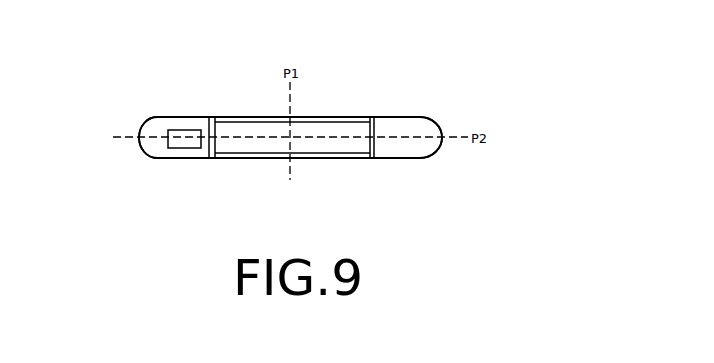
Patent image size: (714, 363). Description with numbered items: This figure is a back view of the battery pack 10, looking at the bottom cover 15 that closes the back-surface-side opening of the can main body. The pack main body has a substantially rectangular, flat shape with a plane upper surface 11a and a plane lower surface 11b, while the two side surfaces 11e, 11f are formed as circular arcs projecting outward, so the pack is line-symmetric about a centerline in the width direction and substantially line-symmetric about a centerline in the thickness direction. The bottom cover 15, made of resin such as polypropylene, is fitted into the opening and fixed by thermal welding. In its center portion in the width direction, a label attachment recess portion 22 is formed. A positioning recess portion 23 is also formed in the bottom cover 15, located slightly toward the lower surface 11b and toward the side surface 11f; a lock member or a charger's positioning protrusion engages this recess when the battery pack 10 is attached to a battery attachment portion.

The battery pack 10 is at (221, 90).
The upper surface 11a is at (337, 116).
The lower surface 11b is at (353, 159).
The side surface 11e is at (141, 138).
The side surface 11f is at (443, 131).
The bottom cover 15 is at (413, 158).
The label attachment recess portion 22 is at (252, 149).
The positioning recess portion 23 is at (182, 143).